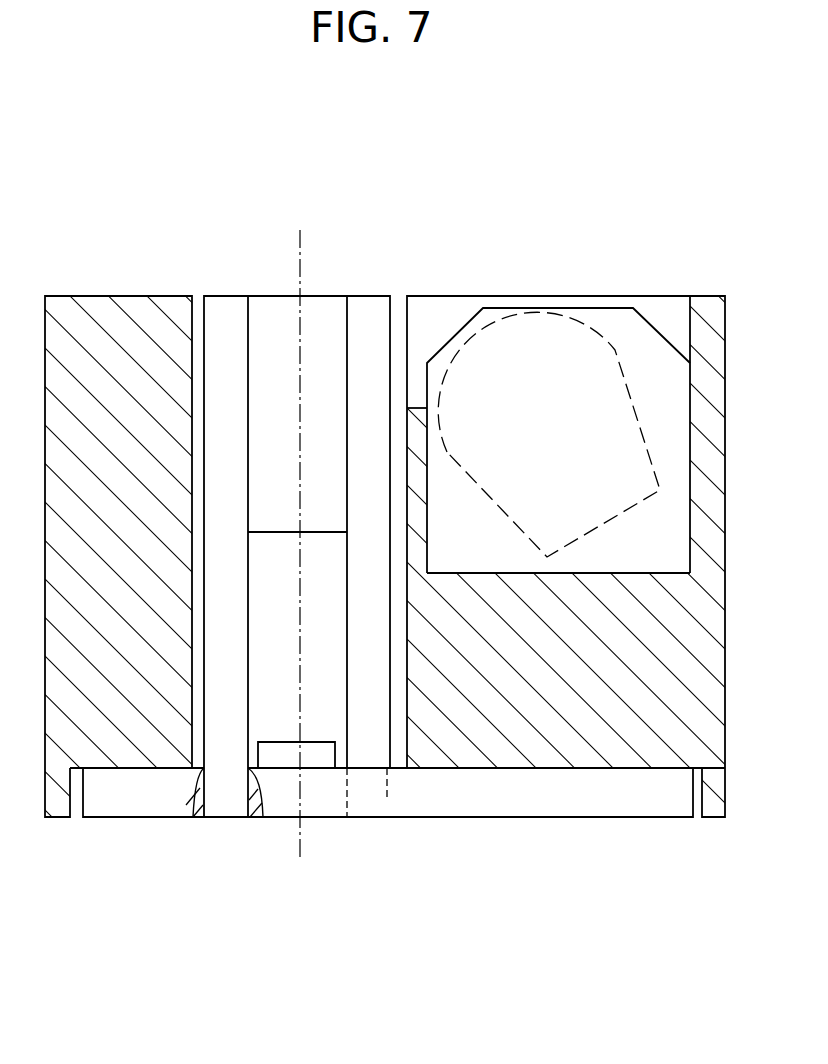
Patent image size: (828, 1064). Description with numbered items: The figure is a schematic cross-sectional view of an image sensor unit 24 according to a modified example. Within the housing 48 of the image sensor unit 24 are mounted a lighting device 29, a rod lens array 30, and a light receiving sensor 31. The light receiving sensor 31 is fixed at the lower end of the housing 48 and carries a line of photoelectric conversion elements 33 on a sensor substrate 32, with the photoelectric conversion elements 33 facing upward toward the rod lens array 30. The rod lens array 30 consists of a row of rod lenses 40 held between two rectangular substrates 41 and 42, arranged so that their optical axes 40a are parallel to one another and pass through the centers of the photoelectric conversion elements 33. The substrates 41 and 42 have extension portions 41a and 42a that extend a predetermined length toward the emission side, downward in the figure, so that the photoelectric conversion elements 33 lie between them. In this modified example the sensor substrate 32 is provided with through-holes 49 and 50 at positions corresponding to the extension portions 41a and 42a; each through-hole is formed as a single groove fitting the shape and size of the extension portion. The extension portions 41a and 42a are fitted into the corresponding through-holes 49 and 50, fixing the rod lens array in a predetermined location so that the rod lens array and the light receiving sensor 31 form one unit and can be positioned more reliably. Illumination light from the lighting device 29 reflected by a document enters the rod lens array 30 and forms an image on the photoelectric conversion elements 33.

The image sensor unit 24 is at (414, 520).
The lighting device 29 is at (607, 307).
The rod lens array 30 is at (278, 296).
The light receiving sensor 31 is at (496, 874).
The sensor substrate 32 is at (612, 807).
The photoelectric conversion elements 33 is at (317, 757).
The rod lens 40 is at (326, 312).
The optical axis 40a is at (301, 247).
The substrate 41 is at (223, 296).
The extension portion 41a is at (217, 805).
The substrate 42 is at (368, 296).
The extension portion 42a is at (363, 758).
The housing 48 is at (113, 296).
The through-hole 49 is at (245, 793).
The through-hole 50 is at (387, 797).